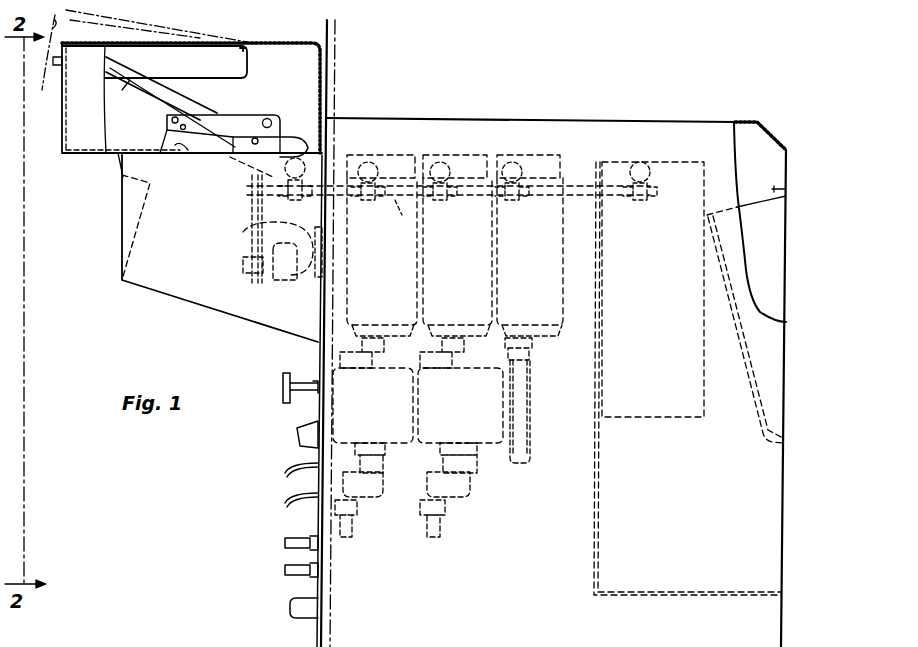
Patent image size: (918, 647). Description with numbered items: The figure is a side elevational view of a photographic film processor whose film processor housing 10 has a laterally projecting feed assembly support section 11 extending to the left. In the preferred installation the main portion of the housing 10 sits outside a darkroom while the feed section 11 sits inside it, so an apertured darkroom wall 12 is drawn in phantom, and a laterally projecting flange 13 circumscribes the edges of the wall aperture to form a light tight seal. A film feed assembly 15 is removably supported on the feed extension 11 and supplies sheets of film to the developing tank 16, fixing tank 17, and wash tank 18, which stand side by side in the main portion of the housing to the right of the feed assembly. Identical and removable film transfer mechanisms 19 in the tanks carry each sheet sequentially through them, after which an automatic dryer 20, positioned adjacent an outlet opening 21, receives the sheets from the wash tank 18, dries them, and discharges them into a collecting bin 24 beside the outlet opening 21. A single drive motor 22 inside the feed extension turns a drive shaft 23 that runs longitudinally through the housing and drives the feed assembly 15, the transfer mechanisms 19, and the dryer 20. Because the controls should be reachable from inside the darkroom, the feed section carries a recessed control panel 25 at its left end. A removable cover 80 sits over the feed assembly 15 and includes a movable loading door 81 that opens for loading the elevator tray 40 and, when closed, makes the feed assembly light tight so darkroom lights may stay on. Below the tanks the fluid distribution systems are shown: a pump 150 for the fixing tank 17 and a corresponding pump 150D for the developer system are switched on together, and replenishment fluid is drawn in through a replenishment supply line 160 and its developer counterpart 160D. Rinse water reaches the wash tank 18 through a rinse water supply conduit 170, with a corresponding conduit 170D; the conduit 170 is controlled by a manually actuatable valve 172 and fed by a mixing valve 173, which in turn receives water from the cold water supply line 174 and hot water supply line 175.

The film processor housing 10 is at (583, 121).
The feed assembly support section 11 is at (197, 307).
The darkroom wall 12 is at (337, 60).
The flange 13 is at (330, 108).
The film feed assembly 15 is at (216, 107).
The developing tank 16 is at (347, 295).
The fixing tank 17 is at (447, 330).
The wash tank 18 is at (565, 313).
The film transfer mechanisms 19 is at (390, 155).
The automatic dryer 20 is at (670, 160).
The outlet opening 21 is at (778, 248).
The drive motor 22 is at (260, 220).
The drive shaft 23 is at (388, 198).
The collecting bin 24 is at (745, 360).
The recessed control panel 25 is at (137, 220).
The elevator tray 40 is at (118, 72).
The removable cover 80 is at (62, 70).
The loading door 81 is at (177, 32).
The pump 150 is at (492, 447).
The pump 150D is at (413, 447).
The replenishment supply line 160 is at (290, 463).
The replenishment supply line 160D is at (293, 493).
The rinse water supply conduit 170 is at (440, 537).
The supply conduit 170D is at (352, 527).
The manually actuatable valve 172 is at (285, 383).
The mixing valve 173 is at (297, 432).
The cold water supply line 174 is at (283, 570).
The hot water supply line 175 is at (285, 543).